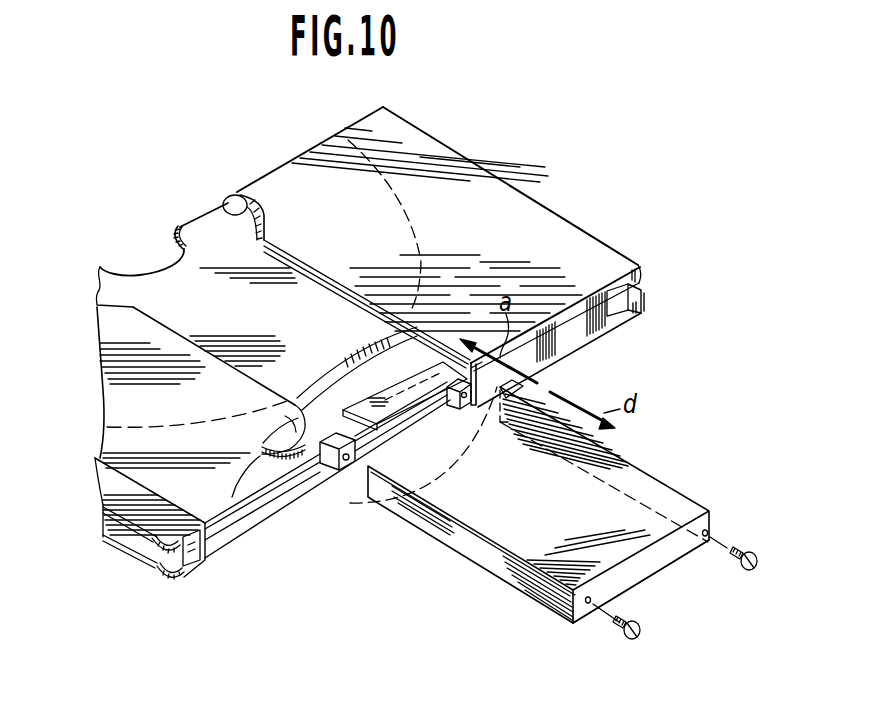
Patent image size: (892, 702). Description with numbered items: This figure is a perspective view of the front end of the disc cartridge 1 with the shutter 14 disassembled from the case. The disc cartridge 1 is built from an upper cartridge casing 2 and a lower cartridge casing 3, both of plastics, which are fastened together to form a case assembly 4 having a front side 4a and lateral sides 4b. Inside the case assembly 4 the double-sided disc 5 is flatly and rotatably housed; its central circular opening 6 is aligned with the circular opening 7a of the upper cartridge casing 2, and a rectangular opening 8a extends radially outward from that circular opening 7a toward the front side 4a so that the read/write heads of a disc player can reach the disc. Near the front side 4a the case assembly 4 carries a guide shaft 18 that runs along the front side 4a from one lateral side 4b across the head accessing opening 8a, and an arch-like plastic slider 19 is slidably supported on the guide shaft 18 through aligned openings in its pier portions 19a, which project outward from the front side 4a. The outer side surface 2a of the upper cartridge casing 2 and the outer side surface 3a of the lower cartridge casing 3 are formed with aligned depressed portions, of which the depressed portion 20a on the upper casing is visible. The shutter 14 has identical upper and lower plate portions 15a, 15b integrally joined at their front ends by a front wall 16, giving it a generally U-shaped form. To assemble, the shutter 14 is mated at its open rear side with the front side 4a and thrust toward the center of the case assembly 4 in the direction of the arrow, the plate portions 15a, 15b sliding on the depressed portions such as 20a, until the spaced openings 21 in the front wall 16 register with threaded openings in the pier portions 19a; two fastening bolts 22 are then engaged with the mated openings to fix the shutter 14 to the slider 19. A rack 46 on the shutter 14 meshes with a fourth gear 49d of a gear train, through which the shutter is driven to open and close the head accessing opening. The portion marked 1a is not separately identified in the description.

The disc cartridge 1 is at (483, 147).
The base portion 1a is at (278, 526).
The upper cartridge casing 2 is at (632, 253).
The outer side surface of upper cartridge casing 2a is at (505, 198).
The lower cartridge casing 3 is at (641, 300).
The outer side surface of lower cartridge casing 3a is at (607, 330).
The case assembly 4 is at (566, 207).
The front side of case assembly 4a is at (557, 353).
The lateral sides of case assembly 4b is at (430, 133).
The disc 5 is at (207, 214).
The central circular opening of disc 6 is at (175, 245).
The circular opening of upper cartridge casing 7a is at (232, 196).
The rectangular opening of upper cartridge casing 8a is at (207, 344).
The shutter 14 is at (643, 471).
The upper plate portion of shutter 15a is at (507, 534).
The lower plate portion of shutter 15b is at (447, 534).
The front wall of shutter 16 is at (633, 578).
The guide shaft 18 is at (258, 496).
The slider 19 is at (333, 468).
The pier portions of slider 19a is at (347, 464).
The depressed portion of upper cartridge casing 20a is at (187, 493).
The spaced openings of front wall 21 is at (710, 531).
The fastening bolts 22 is at (742, 568).
The rack of shutter 46 is at (316, 428).
The fourth gear 49d is at (298, 403).